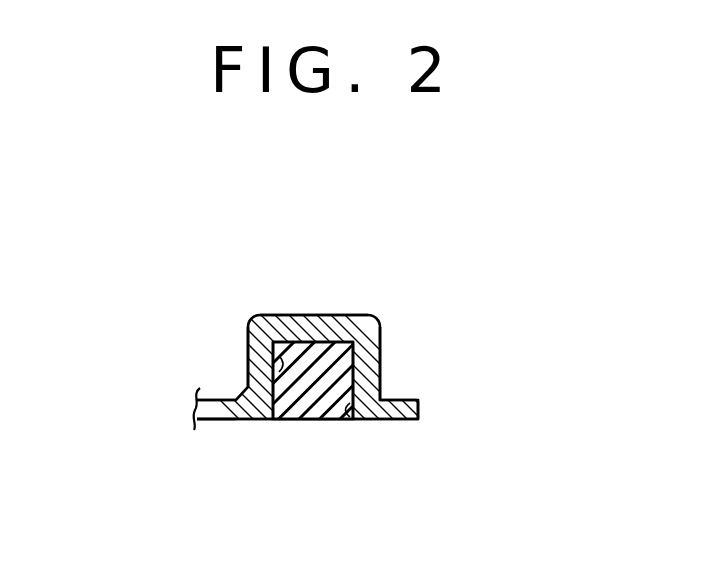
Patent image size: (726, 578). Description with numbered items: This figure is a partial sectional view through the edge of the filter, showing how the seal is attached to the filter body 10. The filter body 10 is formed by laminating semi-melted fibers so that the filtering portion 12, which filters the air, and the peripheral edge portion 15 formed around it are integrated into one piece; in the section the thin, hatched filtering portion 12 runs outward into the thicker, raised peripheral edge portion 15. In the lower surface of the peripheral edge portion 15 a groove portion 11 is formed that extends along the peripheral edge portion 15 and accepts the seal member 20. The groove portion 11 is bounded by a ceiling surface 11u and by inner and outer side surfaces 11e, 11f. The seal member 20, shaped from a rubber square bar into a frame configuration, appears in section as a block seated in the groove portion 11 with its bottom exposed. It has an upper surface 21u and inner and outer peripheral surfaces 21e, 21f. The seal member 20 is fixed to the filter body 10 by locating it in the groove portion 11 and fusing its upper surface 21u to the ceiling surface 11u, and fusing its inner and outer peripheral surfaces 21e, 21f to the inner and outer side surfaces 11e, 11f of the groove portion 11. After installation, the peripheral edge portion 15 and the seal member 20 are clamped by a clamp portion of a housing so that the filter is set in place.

The filter body 10 is at (189, 222).
The groove portion 11 is at (275, 420).
The inner side surface of the groove portion 11e is at (280, 335).
The ceiling surface of the groove portion 11u is at (380, 343).
The outer side surface of the groove portion 11f is at (348, 420).
The filtering portion 12 is at (217, 407).
The peripheral edge portion 15 is at (312, 316).
The seal member 20 is at (330, 420).
The inner peripheral surface of the seal member 21e is at (272, 405).
The upper surface of the seal member 21u is at (337, 343).
The outer peripheral surface of the seal member 21f is at (355, 378).